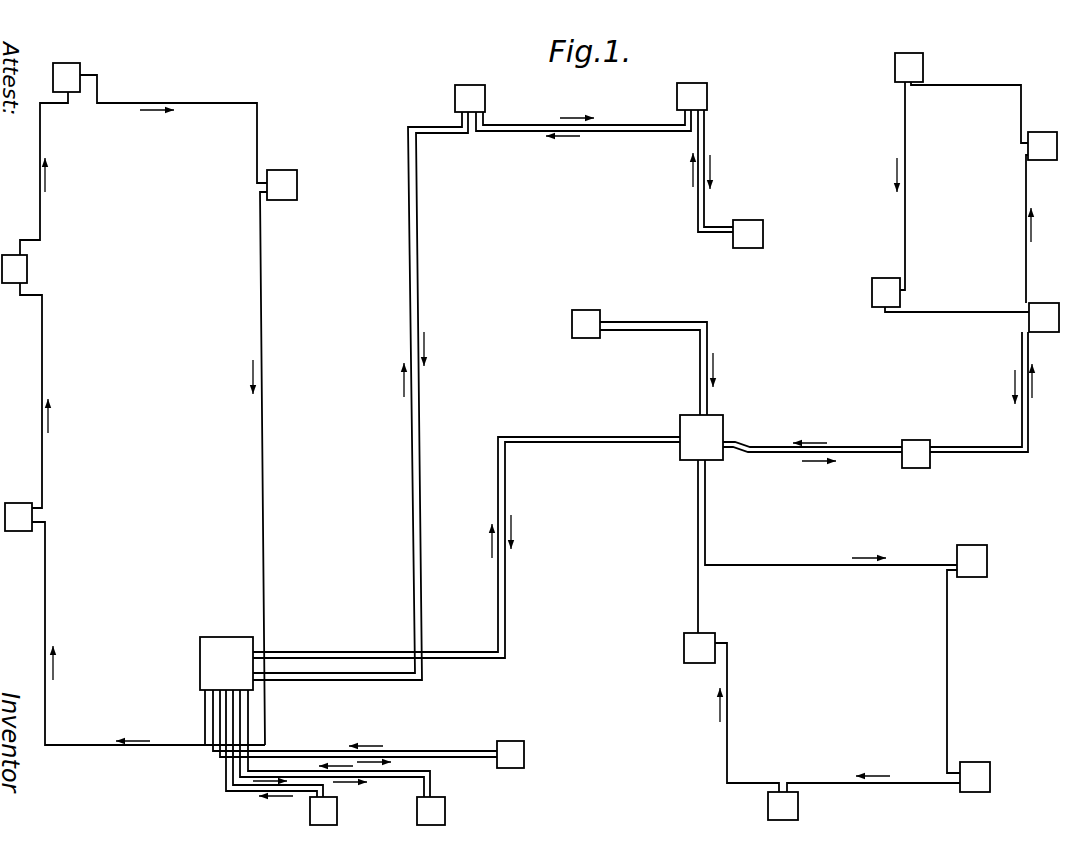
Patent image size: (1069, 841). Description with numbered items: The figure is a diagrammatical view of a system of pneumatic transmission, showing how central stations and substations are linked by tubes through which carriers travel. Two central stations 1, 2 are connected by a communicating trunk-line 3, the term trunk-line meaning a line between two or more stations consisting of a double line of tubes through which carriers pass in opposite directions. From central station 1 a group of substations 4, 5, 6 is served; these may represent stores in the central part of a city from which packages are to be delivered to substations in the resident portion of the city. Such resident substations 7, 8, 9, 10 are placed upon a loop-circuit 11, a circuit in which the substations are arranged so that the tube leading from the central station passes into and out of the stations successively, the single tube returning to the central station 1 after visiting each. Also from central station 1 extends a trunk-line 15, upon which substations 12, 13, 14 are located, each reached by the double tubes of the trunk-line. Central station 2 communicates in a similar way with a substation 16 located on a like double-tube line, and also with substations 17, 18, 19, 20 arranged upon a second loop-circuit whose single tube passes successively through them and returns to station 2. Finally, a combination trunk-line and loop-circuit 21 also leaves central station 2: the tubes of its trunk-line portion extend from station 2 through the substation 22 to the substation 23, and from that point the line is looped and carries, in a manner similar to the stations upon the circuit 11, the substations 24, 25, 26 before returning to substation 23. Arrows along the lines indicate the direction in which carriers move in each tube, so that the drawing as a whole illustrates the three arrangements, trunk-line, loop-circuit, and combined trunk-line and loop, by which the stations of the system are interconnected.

The central station 1 is at (226, 664).
The central station 2 is at (701, 438).
The trunk-line 3 is at (506, 618).
The substation 4 is at (323, 811).
The substation 5 is at (431, 811).
The substation 6 is at (510, 754).
The substation 7 is at (18, 517).
The substation 8 is at (14, 269).
The substation 9 is at (66, 77).
The substation 10 is at (282, 185).
The loop-circuit 11 is at (262, 430).
The substation 12 is at (470, 98).
The substation 13 is at (692, 96).
The substation 14 is at (748, 234).
The trunk-line 15 is at (420, 294).
The substation 16 is at (586, 324).
The substation 17 is at (972, 561).
The substation 18 is at (975, 777).
The substation 19 is at (783, 806).
The substation 20 is at (699, 648).
The combination trunk-line and loop-circuit 21 is at (972, 446).
The substation 22 is at (916, 454).
The substation 23 is at (1044, 317).
The substation 24 is at (1042, 146).
The substation 25 is at (909, 67).
The substation 26 is at (886, 292).